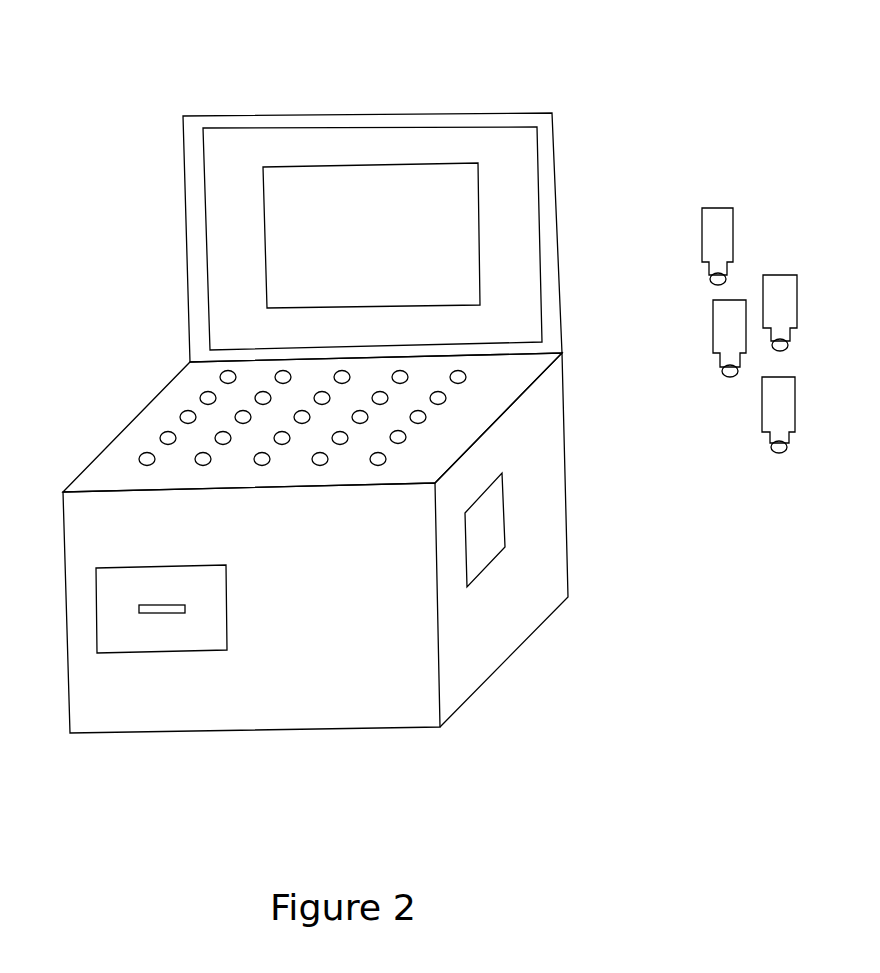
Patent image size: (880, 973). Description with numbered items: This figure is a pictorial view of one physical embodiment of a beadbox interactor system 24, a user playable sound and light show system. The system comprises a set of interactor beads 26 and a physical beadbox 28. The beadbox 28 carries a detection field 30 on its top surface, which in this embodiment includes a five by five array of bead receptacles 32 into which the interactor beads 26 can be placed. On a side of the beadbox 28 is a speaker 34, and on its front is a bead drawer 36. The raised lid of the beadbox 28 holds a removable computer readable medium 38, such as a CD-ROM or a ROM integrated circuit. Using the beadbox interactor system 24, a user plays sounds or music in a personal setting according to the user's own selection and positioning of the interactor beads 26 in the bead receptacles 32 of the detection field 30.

The beadbox interactor system 24 is at (142, 74).
The interactor beads 26 is at (706, 272).
The beadbox 28 is at (176, 373).
The detection field 30 is at (485, 396).
The bead receptacles 32 is at (406, 437).
The speaker 34 is at (483, 528).
The bead drawer 36 is at (102, 611).
The removable computer readable medium 38 is at (352, 210).